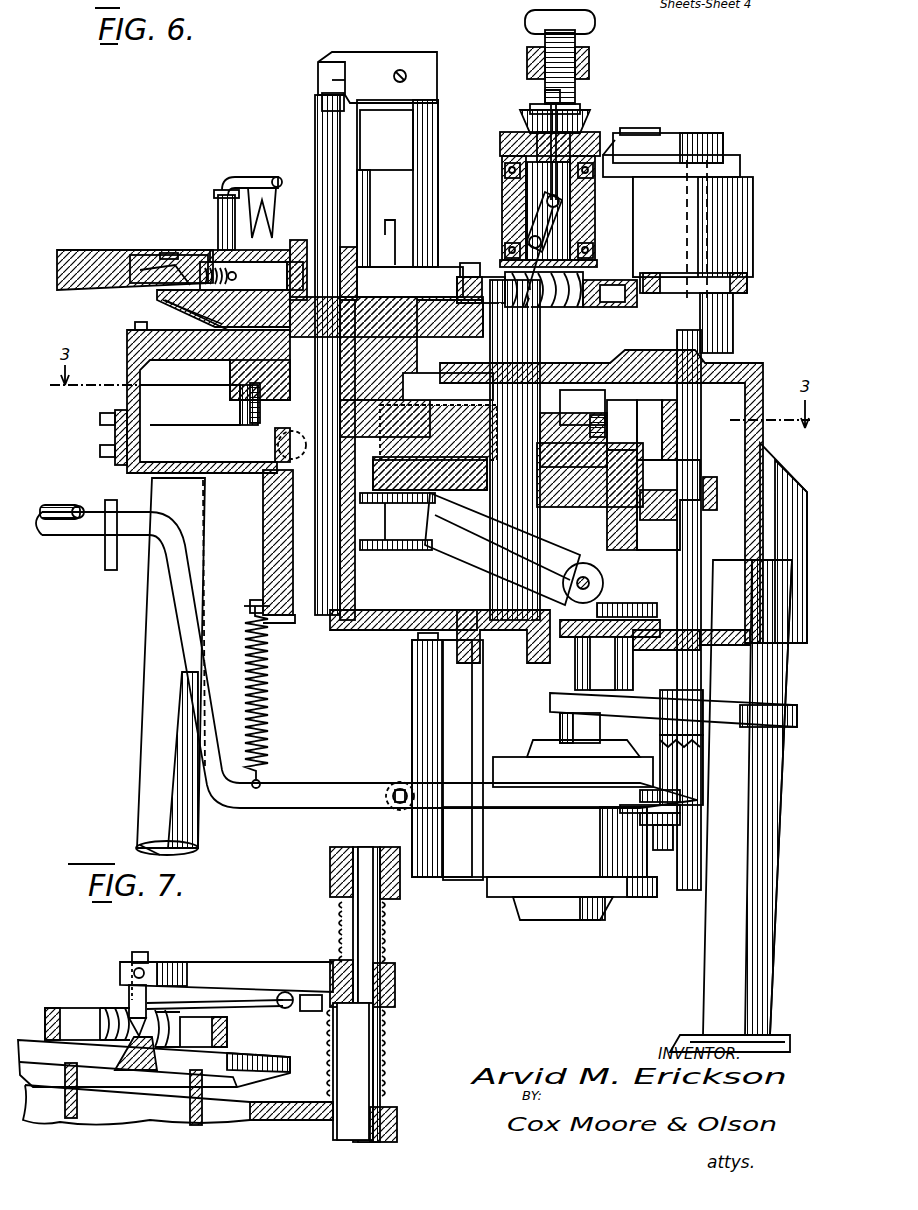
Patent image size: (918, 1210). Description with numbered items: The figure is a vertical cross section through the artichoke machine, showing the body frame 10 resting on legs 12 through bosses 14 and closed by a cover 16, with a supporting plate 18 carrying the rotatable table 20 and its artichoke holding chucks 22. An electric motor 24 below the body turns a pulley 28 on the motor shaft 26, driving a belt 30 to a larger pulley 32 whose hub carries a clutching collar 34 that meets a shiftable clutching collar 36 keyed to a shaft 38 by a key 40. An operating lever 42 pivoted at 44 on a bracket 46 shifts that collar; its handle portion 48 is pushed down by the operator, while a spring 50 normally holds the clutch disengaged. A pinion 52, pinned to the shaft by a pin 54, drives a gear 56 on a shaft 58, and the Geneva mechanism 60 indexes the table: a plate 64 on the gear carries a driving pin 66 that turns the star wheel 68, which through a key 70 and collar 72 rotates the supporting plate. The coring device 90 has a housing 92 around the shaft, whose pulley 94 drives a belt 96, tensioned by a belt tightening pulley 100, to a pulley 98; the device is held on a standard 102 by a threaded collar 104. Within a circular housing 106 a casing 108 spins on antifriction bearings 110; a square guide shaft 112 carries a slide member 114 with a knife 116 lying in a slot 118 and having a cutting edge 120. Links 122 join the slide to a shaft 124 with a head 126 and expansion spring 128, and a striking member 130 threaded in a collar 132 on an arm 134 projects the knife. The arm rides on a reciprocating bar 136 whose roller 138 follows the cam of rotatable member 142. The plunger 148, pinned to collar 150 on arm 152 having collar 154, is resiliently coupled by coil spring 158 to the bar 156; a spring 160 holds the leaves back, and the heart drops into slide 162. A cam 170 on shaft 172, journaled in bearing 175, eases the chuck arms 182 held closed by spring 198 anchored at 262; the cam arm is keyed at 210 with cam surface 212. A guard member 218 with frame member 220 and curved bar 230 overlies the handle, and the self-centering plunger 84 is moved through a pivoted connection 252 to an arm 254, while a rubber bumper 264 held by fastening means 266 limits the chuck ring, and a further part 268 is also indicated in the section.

In FIG. 6, the frame 10 is at (158, 558).
In FIG. 6, the legs 12 is at (155, 684).
In FIG. 6, the bosses 14 is at (770, 590).
In FIG. 6, the cover 16 is at (760, 360).
In FIG. 6, the supporting plate 18 is at (158, 295).
In FIG. 6, the rotatable table 20 is at (85, 258).
In FIG. 7, the rotatable table 20 is at (265, 1062).
In FIG. 6, the artichoke holding chucks 22 is at (738, 328).
In FIG. 7, the artichoke holding chucks 22 is at (37, 995).
In FIG. 6, the electric motor 24 is at (545, 903).
In FIG. 6, the motor shaft 26 is at (570, 678).
In FIG. 6, the pulley 28 is at (560, 718).
In FIG. 6, the belt 30 is at (740, 705).
In FIG. 6, the pulley 32 is at (665, 690).
In FIG. 6, the clutching collar 34 is at (685, 752).
In FIG. 6, the shiftable clutching collar 36 is at (690, 770).
In FIG. 6, the shaft 38 is at (762, 462).
In FIG. 6, the key 40 is at (665, 845).
In FIG. 6, the operating lever 42 is at (286, 782).
In FIG. 6, the pivot 44 is at (395, 785).
In FIG. 6, the bracket 46 is at (420, 692).
In FIG. 6, the handle portion 48 is at (70, 535).
In FIG. 6, the spring 50 is at (245, 633).
In FIG. 6, the pinion 52 is at (718, 497).
In FIG. 6, the pin 54 is at (690, 540).
In FIG. 6, the gear 56 is at (440, 510).
In FIG. 6, the shaft 58 is at (487, 665).
In FIG. 6, the Geneva mechanism 60 is at (556, 397).
In FIG. 6, the plate 64 is at (650, 465).
In FIG. 6, the driving pin 66 is at (640, 430).
In FIG. 6, the star wheel 68 is at (115, 436).
In FIG. 6, the key 70 is at (240, 430).
In FIG. 6, the collar 72 is at (235, 376).
In FIG. 6, the self-centering plunger 84 is at (372, 188).
In FIG. 6, the coring device 90 is at (600, 150).
In FIG. 6, the housing 92 is at (740, 190).
In FIG. 6, the pulley 94 is at (720, 150).
In FIG. 6, the belt 96 is at (525, 142).
In FIG. 6, the pulley 98 is at (520, 150).
In FIG. 6, the belt tightening pulley 100 is at (665, 140).
In FIG. 6, the standard 102 is at (735, 312).
In FIG. 6, the threaded collar 104 is at (748, 283).
In FIG. 6, the circular housing 106 is at (512, 215).
In FIG. 6, the casing 108 is at (512, 235).
In FIG. 6, the antifriction bearings 110 is at (592, 190).
In FIG. 6, the square guide shaft 112 is at (520, 232).
In FIG. 6, the slide member 114 is at (560, 248).
In FIG. 6, the knife 116 is at (556, 300).
In FIG. 6, the slot 118 is at (515, 275).
In FIG. 6, the cutting edge 120 is at (527, 310).
In FIG. 6, the links 122 is at (515, 195).
In FIG. 6, the shaft 124 is at (606, 126).
In FIG. 6, the head 126 is at (548, 120).
In FIG. 6, the expansion spring 128 is at (532, 118).
In FIG. 6, the adjustable striking member 130 is at (575, 38).
In FIG. 6, the collar 132 is at (588, 62).
In FIG. 7, the arm 134 is at (332, 872).
In FIG. 7, the reciprocating bar 136 is at (375, 1034).
In FIG. 6, the roller 138 is at (545, 567).
In FIG. 6, the rotatable member 142 is at (450, 540).
In FIG. 7, the plunger 148 is at (130, 1000).
In FIG. 7, the collar 150 is at (135, 965).
In FIG. 7, the arm 152 is at (295, 965).
In FIG. 7, the collar 154 is at (396, 990).
In FIG. 7, the bar 156 is at (380, 910).
In FIG. 7, the coil spring 158 is at (388, 947).
In FIG. 7, the spring 160 is at (245, 1014).
In FIG. 7, the enclosed slide 162 is at (190, 1100).
In FIG. 6, the cam 170 is at (204, 244).
In FIG. 6, the shaft 172 is at (300, 555).
In FIG. 6, the bearing 175 is at (273, 607).
In FIG. 7, the arms 182 is at (198, 1030).
In FIG. 6, the spring 198 is at (236, 278).
In FIG. 6, the keyed connection 210 is at (120, 590).
In FIG. 6, the cam surface 212 is at (470, 420).
In FIG. 6, the guard member 218 is at (255, 180).
In FIG. 6, the frame member 220 is at (234, 222).
In FIG. 6, the curved bar 230 is at (60, 505).
In FIG. 6, the pivoted connection 252 is at (322, 104).
In FIG. 6, the arm 254 is at (405, 60).
In FIG. 6, the spring attachment 262 is at (140, 282).
In FIG. 6, the rubber bumper 264 is at (185, 312).
In FIG. 6, the fastening means 266 is at (165, 270).
In FIG. 6, the stop 268 is at (276, 452).